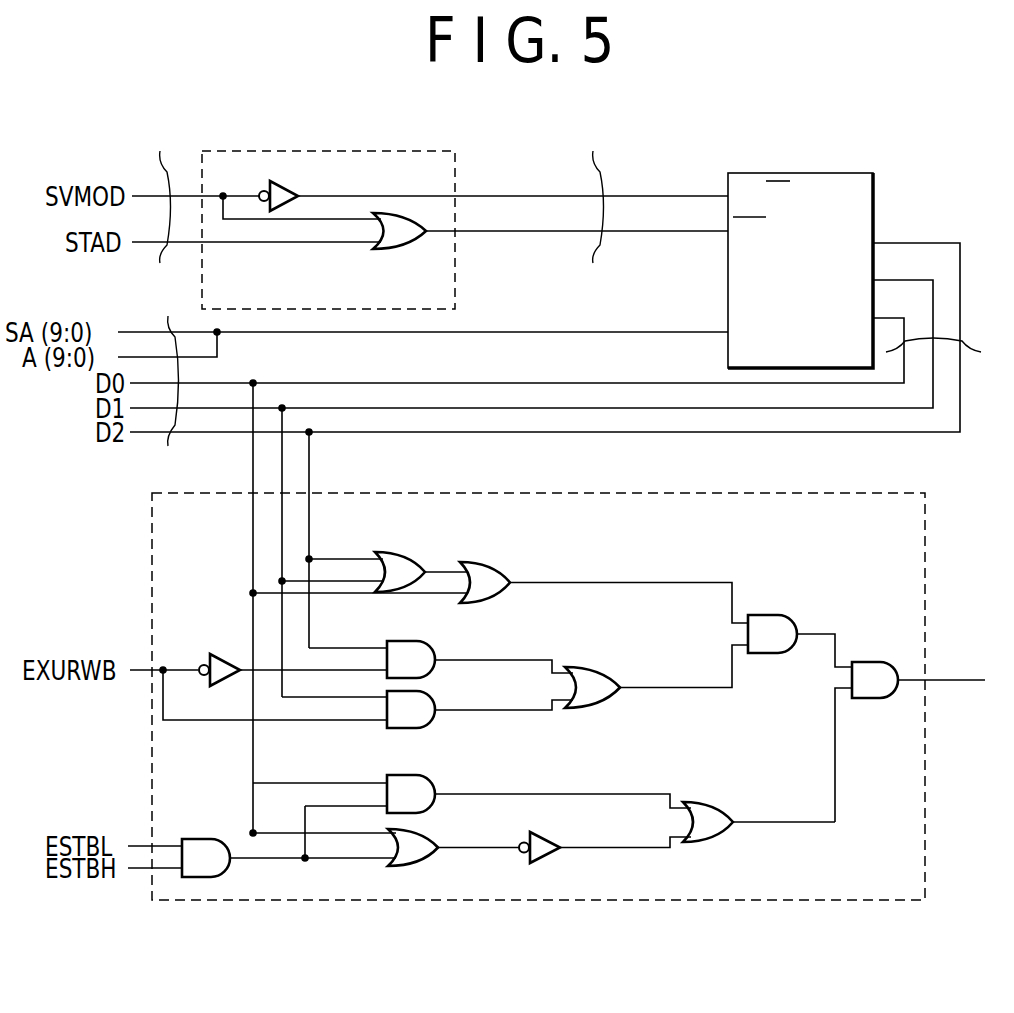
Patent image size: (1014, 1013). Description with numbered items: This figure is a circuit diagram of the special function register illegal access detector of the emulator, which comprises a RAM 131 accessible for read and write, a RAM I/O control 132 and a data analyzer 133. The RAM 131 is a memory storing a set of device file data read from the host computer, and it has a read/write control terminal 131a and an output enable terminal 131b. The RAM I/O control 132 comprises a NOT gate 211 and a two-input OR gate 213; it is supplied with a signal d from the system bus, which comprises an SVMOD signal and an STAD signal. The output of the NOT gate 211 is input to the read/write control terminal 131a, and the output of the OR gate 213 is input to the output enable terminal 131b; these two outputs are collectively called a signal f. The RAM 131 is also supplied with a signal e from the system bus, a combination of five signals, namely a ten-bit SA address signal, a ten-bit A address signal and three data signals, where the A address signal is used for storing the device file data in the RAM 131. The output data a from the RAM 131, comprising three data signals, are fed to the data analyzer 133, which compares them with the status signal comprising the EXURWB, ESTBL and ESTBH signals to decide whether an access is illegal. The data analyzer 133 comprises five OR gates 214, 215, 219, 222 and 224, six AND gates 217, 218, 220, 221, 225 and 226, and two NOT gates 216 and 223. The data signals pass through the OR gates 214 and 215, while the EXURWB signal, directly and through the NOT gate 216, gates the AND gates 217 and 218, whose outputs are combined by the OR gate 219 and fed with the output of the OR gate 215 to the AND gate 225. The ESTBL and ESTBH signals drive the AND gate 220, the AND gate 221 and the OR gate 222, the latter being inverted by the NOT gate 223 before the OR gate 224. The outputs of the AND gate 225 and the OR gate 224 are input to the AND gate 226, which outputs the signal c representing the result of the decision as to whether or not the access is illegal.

The RAM 131 is at (765, 173).
The read/write control terminal 131a is at (728, 192).
The output enable terminal 131b is at (728, 236).
The RAM I/O control 132 is at (238, 150).
The data analyzer 133 is at (928, 575).
The NOT gate 211 is at (302, 186).
The 2-input OR gate 213 is at (398, 252).
The OR gate 214 is at (412, 552).
The OR gate 215 is at (490, 562).
The NOT gate 216 is at (225, 654).
The AND gate 217 is at (437, 654).
The AND gate 218 is at (437, 728).
The OR gate 219 is at (597, 667).
The AND gate 220 is at (208, 839).
The AND gate 221 is at (437, 788).
The OR gate 222 is at (437, 862).
The NOT gate 223 is at (552, 852).
The OR gate 224 is at (714, 802).
The AND gate 225 is at (790, 615).
The AND gate 226 is at (875, 662).
The output data signal a is at (966, 340).
The output signal c is at (940, 680).
The signal from the system bus d is at (159, 194).
The signal from the system bus e is at (168, 318).
The RAM control signal f is at (597, 189).